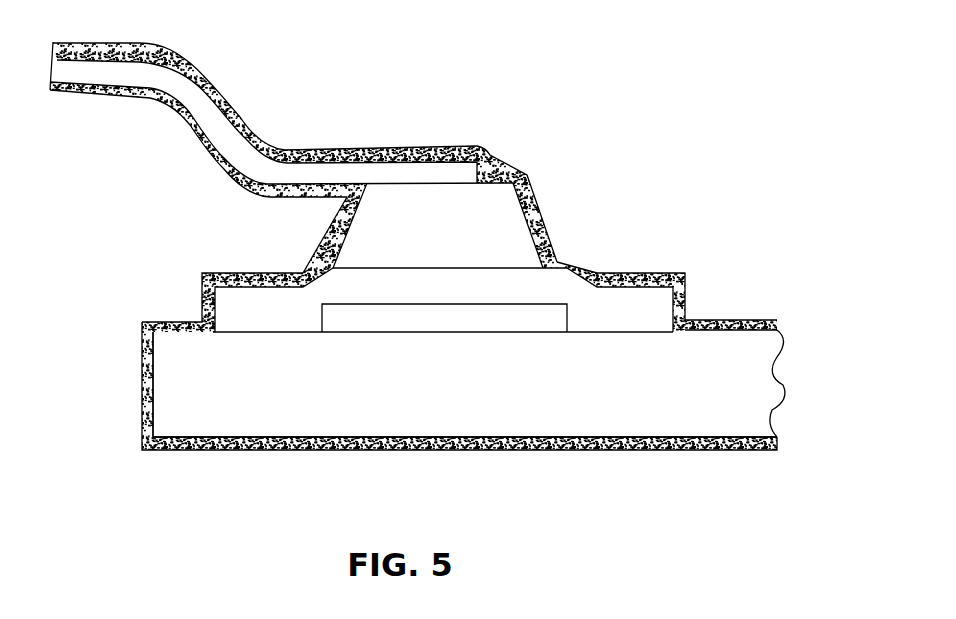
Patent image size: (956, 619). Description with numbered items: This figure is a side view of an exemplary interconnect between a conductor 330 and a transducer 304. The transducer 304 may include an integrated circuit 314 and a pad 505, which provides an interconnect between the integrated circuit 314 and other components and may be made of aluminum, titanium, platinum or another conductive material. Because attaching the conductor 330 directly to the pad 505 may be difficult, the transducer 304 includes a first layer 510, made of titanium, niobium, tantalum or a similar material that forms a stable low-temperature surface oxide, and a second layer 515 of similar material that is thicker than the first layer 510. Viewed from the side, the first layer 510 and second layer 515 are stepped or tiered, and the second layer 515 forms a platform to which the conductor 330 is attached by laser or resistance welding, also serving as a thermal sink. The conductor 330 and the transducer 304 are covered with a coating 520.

The conductor 330 is at (292, 168).
The second layer 515 is at (510, 220).
The pad 505 is at (550, 315).
The first layer 510 is at (652, 300).
The transducer 304 is at (702, 358).
The coating 520 is at (202, 448).
The integrated circuit 314 is at (513, 400).